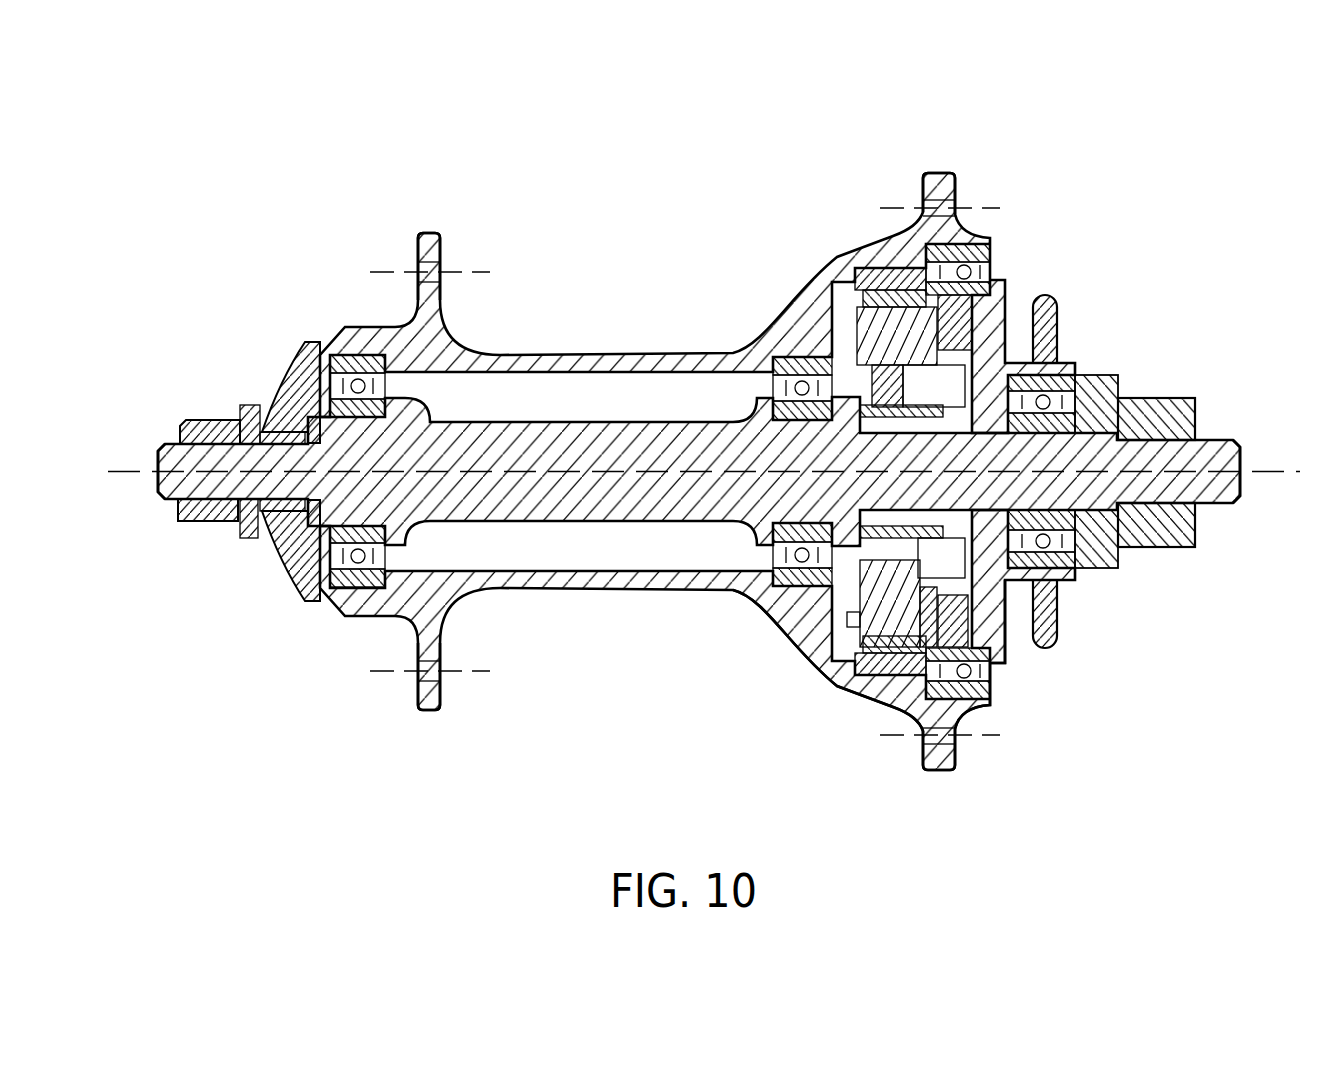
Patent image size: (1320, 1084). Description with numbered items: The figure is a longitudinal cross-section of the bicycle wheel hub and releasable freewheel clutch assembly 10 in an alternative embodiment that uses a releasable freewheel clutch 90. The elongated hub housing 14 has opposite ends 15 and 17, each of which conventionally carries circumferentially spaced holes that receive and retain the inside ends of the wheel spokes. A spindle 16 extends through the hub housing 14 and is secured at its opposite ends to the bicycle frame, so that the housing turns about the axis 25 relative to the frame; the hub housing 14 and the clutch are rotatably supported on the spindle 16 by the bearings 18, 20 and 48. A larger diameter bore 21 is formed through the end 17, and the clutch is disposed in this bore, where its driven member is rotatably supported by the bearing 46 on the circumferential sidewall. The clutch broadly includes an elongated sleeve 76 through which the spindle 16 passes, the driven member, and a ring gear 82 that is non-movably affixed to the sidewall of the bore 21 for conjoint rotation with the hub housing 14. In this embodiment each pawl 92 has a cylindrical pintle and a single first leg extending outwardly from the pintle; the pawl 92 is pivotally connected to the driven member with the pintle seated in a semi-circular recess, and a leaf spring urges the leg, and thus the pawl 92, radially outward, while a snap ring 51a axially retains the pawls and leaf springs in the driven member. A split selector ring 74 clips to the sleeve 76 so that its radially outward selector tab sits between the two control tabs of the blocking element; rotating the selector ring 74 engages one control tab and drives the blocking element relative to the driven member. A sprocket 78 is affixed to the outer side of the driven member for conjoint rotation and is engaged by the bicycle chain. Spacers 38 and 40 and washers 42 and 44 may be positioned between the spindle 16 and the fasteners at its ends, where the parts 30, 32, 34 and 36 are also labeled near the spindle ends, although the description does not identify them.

The bicycle wheel hub and releasable freewheel clutch assembly 10 is at (647, 198).
The hub housing 14 is at (628, 356).
The end 15 is at (432, 233).
The spindle 16 is at (543, 430).
The end 17 is at (935, 173).
The bearing 18 is at (356, 360).
The bearing 20 is at (775, 358).
The larger diameter bore 21 is at (837, 600).
The axis 25 is at (1268, 478).
The first axle end 30 is at (168, 508).
The second axle end 32 is at (1205, 515).
The first lock nut 34 is at (205, 436).
The second lock nut 36 is at (1165, 412).
The spacer 38 is at (290, 395).
The spacer 40 is at (1085, 378).
The washer 42 is at (250, 535).
The washer 44 is at (1110, 386).
The bearing 46 is at (982, 696).
The bearing 48 is at (1063, 598).
The snap ring 51a is at (852, 656).
The selector ring 74 is at (862, 532).
The elongated sleeve 76 is at (856, 540).
The sprocket 78 is at (1050, 300).
The ring gear 82 is at (870, 286).
The releasable freewheel clutch 90 is at (847, 620).
The pawl 92 is at (828, 304).